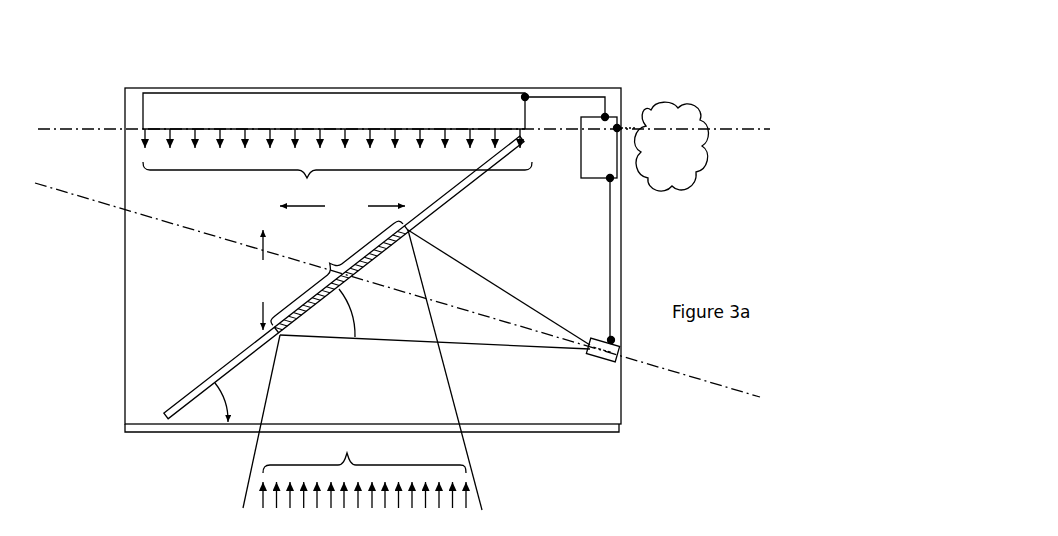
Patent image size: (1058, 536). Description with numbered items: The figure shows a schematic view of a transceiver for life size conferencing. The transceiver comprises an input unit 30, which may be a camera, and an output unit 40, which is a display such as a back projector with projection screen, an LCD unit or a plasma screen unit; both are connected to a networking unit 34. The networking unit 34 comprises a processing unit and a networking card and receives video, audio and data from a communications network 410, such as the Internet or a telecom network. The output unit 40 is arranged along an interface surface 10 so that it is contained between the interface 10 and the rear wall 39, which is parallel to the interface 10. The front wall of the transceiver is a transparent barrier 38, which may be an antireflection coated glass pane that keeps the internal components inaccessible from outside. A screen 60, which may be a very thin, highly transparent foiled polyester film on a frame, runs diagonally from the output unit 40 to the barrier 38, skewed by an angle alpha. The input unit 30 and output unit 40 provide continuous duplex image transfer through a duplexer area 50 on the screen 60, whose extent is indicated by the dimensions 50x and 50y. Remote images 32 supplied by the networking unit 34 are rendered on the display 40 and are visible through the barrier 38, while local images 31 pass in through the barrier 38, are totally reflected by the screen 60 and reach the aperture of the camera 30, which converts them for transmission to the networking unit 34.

The interface surface 10 is at (38, 129).
The input unit 30 is at (598, 338).
The local images 31 is at (342, 448).
The remote images 32 is at (305, 179).
The networking unit 34 is at (580, 219).
The transparent barrier 38 is at (560, 432).
The rear wall 39 is at (558, 88).
The output unit 40 is at (334, 111).
The duplexer area 50 is at (416, 361).
The horizontal extent of illuminated region 50x is at (342, 206).
The vertical extent of illuminated region 50y is at (274, 280).
The screen 60 is at (185, 397).
The communications network 410 is at (672, 146).